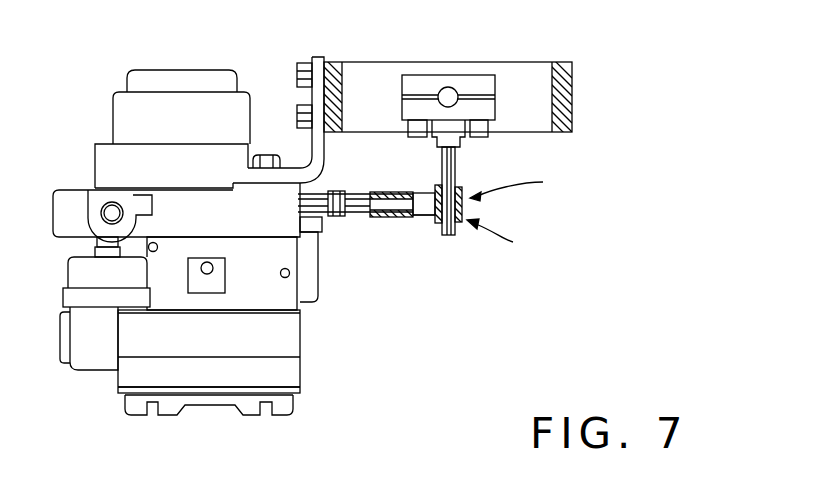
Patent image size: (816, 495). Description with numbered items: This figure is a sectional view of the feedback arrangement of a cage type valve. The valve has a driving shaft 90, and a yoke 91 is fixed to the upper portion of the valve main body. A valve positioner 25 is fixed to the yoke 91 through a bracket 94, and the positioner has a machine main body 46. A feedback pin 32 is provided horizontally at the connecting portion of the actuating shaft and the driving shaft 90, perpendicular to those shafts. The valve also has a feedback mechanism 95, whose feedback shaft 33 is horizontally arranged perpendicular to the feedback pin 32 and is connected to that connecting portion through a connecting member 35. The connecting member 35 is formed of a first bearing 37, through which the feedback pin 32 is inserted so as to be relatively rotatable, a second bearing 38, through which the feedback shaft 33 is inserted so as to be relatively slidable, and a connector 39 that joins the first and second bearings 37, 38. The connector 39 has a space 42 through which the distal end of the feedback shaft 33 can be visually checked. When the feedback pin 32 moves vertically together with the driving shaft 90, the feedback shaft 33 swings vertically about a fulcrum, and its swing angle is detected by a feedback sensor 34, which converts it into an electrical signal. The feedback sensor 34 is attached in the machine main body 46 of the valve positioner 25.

The valve positioner 25 is at (223, 347).
The feedback pin 32 is at (449, 235).
The feedback shaft 33 is at (362, 212).
The feedback sensor 34 is at (225, 202).
The connecting member 35 is at (501, 240).
The first bearing 37 is at (462, 183).
The second bearing 38 is at (378, 192).
The connector 39 is at (428, 215).
The space 42 is at (427, 202).
The machine main body 46 is at (130, 373).
The driving shaft 90 is at (449, 87).
The yoke 91 is at (572, 83).
The bracket 94 is at (320, 53).
The feedback mechanism 95 is at (520, 183).